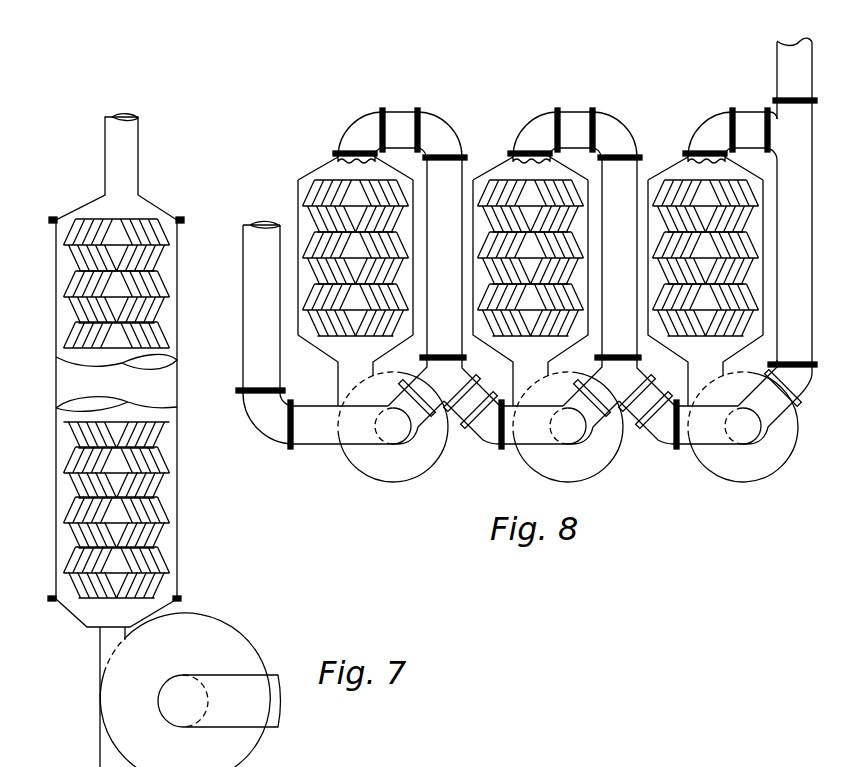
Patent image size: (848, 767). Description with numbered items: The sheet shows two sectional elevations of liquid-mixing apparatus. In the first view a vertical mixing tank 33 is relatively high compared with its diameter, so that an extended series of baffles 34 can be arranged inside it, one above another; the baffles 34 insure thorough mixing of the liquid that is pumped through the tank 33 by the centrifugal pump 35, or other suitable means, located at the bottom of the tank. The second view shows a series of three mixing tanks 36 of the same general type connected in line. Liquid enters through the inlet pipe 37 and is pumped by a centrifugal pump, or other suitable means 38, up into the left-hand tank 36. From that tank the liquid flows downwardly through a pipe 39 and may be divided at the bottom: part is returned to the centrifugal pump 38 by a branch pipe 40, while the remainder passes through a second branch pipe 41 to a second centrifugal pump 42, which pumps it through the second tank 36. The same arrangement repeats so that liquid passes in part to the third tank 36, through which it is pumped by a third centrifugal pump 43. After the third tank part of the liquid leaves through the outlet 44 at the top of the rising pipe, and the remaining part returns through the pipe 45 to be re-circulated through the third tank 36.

In FIG. 7, the vertical mixing tank 33 is at (178, 248).
In FIG. 7, the baffles 34 is at (158, 508).
In FIG. 7, the centrifugal pump 35 is at (243, 645).
In FIG. 8, the mixing tanks 36 is at (299, 186).
In FIG. 8, the inlet pipe 37 is at (243, 290).
In FIG. 8, the centrifugal pump 38 is at (397, 478).
In FIG. 8, the pipe 39 is at (463, 165).
In FIG. 8, the branch pipe 40 is at (420, 428).
In FIG. 8, the second branch pipe 41 is at (485, 447).
In FIG. 8, the second centrifugal pump 42 is at (606, 465).
In FIG. 8, the third centrifugal pump 43 is at (767, 482).
In FIG. 8, the outlet 44 is at (797, 48).
In FIG. 8, the pipe 45 is at (803, 266).